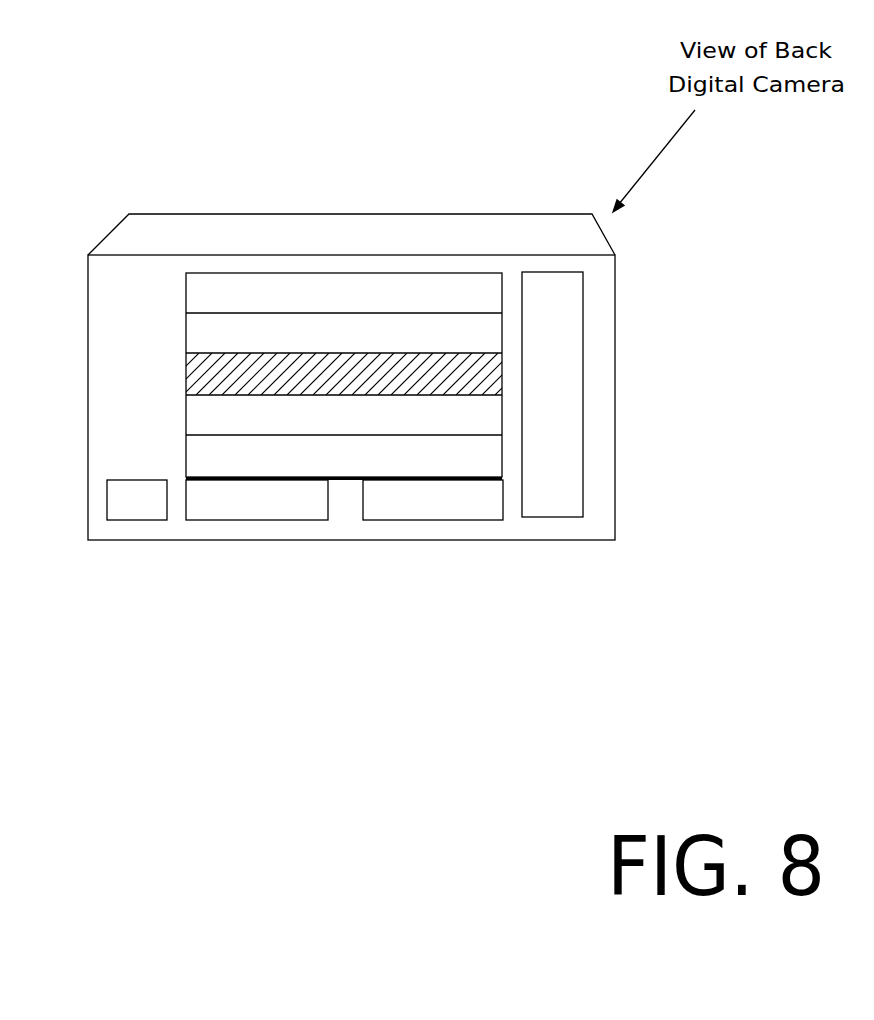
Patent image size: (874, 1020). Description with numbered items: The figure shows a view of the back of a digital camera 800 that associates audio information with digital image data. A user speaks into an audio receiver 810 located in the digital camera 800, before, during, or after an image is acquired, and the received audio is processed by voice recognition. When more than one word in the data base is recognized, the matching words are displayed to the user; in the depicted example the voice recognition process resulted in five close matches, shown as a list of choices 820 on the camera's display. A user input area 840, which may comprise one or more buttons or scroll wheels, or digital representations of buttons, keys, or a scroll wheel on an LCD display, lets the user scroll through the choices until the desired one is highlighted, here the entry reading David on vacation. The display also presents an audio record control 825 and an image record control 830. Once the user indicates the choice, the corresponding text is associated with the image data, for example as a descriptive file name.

The digital camera 800 is at (595, 525).
The audio receiver 810 is at (101, 531).
The list of image names on display 820 is at (402, 273).
The Audio Rec button 825 is at (229, 531).
The Image Rec button 830 is at (478, 531).
The user input area 840 is at (583, 317).